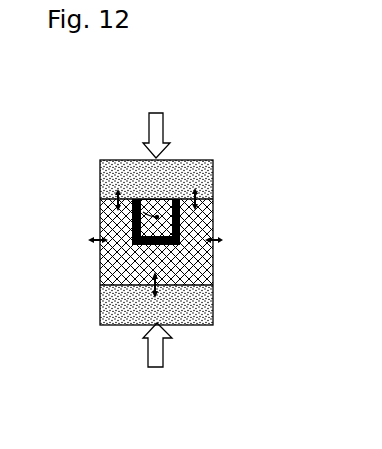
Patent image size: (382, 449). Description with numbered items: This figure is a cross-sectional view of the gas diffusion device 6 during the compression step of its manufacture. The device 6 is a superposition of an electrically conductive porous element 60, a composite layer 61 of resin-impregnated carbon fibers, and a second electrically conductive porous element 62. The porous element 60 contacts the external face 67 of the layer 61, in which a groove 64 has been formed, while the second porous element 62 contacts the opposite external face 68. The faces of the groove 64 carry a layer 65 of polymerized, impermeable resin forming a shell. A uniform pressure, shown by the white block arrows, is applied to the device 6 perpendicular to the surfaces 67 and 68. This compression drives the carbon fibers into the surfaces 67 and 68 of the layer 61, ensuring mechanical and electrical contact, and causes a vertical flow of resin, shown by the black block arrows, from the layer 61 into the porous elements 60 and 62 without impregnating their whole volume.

The gas diffusion device 6 is at (213, 138).
The electrically conductive porous element 60 is at (153, 186).
The composite layer 61 is at (100, 251).
The second electrically conductive porous element 62 is at (137, 317).
The groove 64 is at (117, 192).
The layer of polymerized resin 65 is at (100, 262).
The external face 67 is at (208, 203).
The external face 68 is at (197, 297).